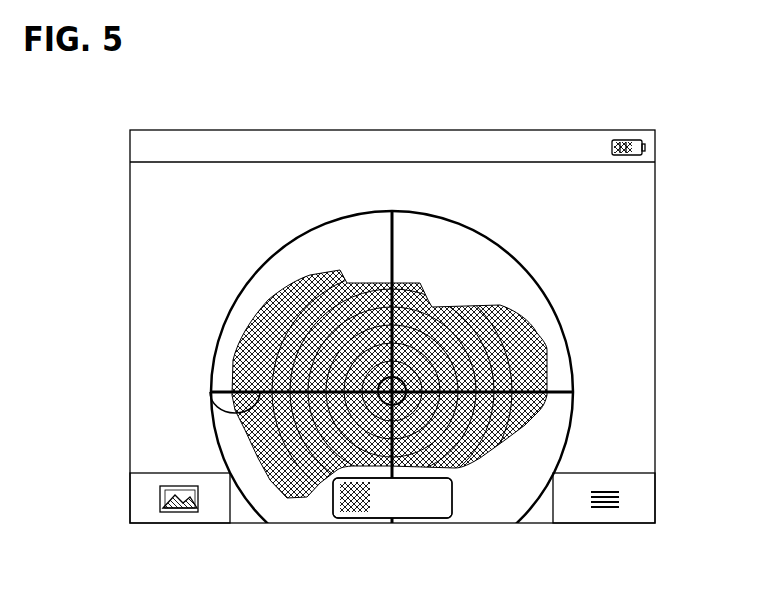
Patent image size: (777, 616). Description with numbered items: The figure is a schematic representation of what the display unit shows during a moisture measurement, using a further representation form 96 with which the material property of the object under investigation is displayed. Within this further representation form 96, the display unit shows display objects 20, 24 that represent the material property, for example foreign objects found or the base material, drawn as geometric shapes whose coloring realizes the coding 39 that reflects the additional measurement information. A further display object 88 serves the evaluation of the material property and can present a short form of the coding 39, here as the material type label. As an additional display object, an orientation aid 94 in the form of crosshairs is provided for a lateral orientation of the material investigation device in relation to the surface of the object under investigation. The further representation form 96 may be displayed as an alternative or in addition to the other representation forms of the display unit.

The display object 20 is at (399, 315).
The display object 24 is at (545, 346).
The coding 39 is at (368, 518).
The further display object 88 is at (378, 552).
The orientation aid 94 is at (238, 414).
The further representation form 96 is at (660, 137).